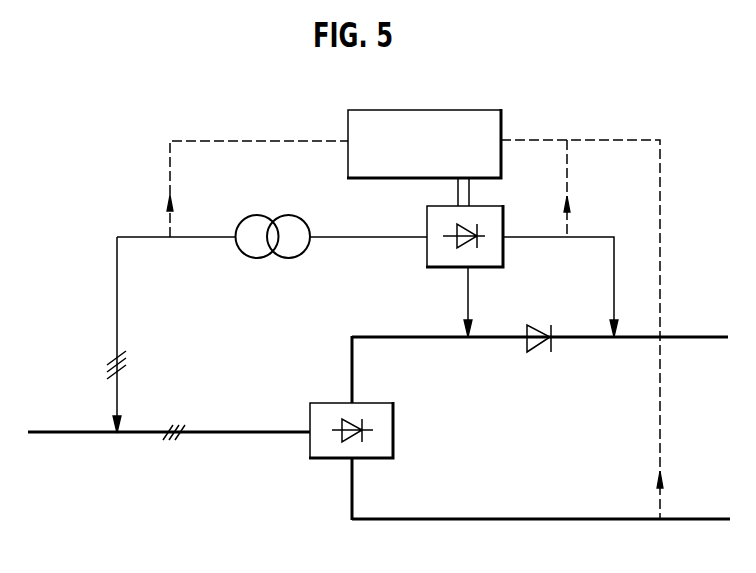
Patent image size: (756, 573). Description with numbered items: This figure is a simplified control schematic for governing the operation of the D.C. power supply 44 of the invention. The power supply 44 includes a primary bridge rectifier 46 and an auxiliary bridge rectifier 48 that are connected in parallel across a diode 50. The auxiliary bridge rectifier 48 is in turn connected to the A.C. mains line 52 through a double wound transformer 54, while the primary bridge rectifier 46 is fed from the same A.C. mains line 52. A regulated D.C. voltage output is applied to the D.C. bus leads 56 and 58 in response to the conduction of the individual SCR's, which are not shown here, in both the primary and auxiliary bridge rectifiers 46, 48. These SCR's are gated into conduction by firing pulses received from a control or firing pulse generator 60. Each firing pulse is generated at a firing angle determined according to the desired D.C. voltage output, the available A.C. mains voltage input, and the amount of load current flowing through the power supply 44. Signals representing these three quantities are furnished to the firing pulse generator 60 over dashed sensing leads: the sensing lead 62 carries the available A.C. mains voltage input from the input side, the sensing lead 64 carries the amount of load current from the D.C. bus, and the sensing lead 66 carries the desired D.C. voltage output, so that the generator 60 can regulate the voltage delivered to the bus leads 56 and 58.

The power supply 44 is at (137, 96).
The primary bridge rectifier 46 is at (310, 455).
The auxiliary bridge rectifier 48 is at (504, 267).
The diode 50 is at (545, 352).
The A.C. mains line 52 is at (78, 434).
The double wound transformer 54 is at (273, 211).
The D.C. bus lead 56 is at (693, 340).
The D.C. bus lead 58 is at (707, 517).
The firing pulse generator 60 is at (501, 113).
The sensing lead 62 is at (169, 173).
The sensing lead 64 is at (661, 253).
The sensing lead 66 is at (568, 170).